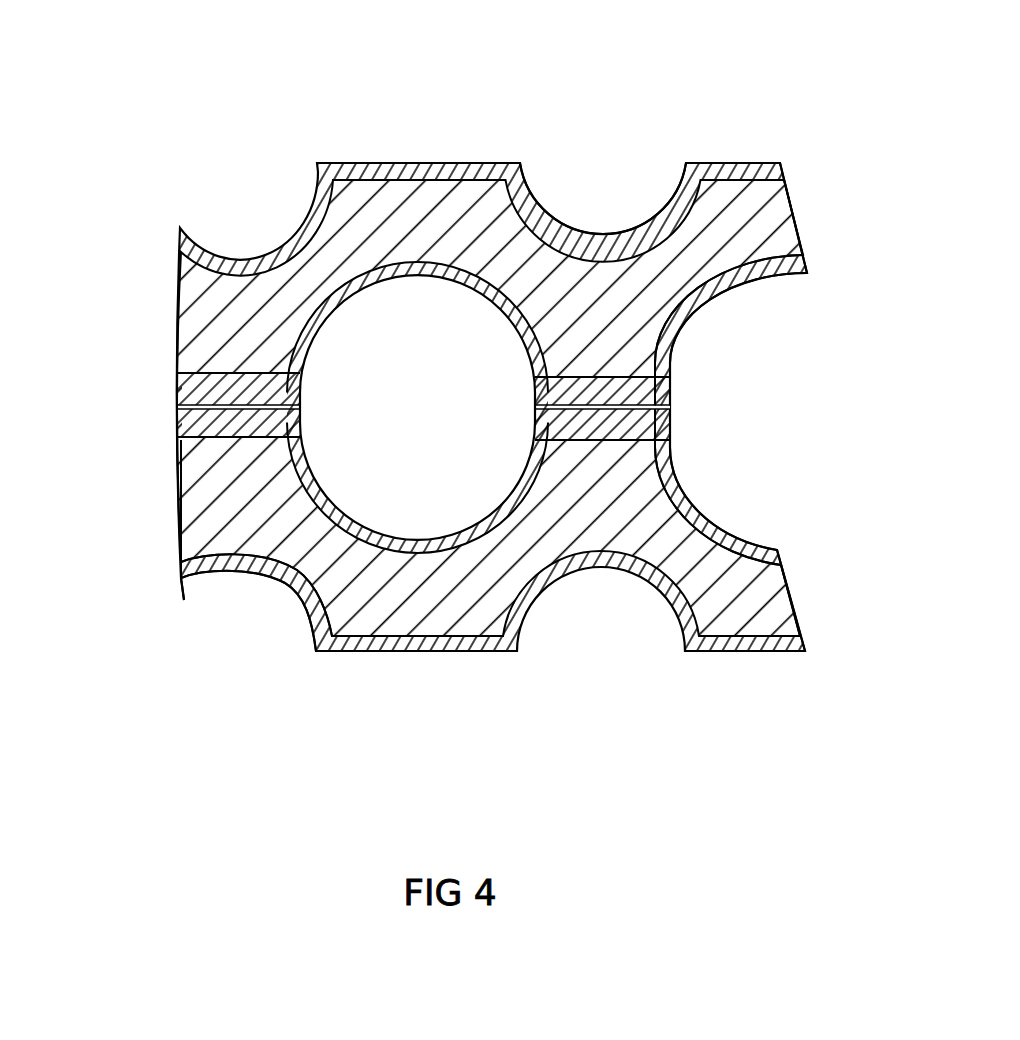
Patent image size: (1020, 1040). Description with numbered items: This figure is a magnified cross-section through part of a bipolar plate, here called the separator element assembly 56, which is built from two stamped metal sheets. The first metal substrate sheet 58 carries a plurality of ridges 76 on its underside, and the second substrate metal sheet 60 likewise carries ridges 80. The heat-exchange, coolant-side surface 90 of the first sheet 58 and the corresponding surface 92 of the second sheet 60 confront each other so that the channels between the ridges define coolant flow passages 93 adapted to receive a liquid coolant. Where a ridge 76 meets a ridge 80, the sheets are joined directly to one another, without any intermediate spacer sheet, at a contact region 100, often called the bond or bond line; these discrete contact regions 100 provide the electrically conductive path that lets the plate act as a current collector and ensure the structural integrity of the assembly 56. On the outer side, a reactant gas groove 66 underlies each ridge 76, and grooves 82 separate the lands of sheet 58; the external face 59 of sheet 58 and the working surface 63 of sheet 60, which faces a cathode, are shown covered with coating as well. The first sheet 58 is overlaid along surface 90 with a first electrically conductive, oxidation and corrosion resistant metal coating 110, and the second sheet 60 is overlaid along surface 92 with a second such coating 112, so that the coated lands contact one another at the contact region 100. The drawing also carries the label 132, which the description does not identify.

The separator element assembly 56 is at (118, 128).
The first metal substrate sheet 58 is at (780, 217).
The external face of first sheet 59 is at (418, 146).
The second substrate metal sheet 60 is at (770, 610).
The working surface of second sheet 63 is at (392, 672).
The reactant gas groove 66 is at (600, 190).
The ridges of first sheet 76 is at (630, 352).
The ridges of second sheet 80 is at (630, 485).
The grooves of first sheet 82 is at (325, 447).
The heat exchange surface of first sheet 90 is at (420, 284).
The heat exchange surface of second sheet 92 is at (407, 537).
The coolant flow passages 93 is at (432, 425).
The contact region 100 is at (685, 409).
The first metal coating 110 is at (720, 170).
The second metal coating 112 is at (772, 547).
The lower wall portion 132 is at (363, 607).